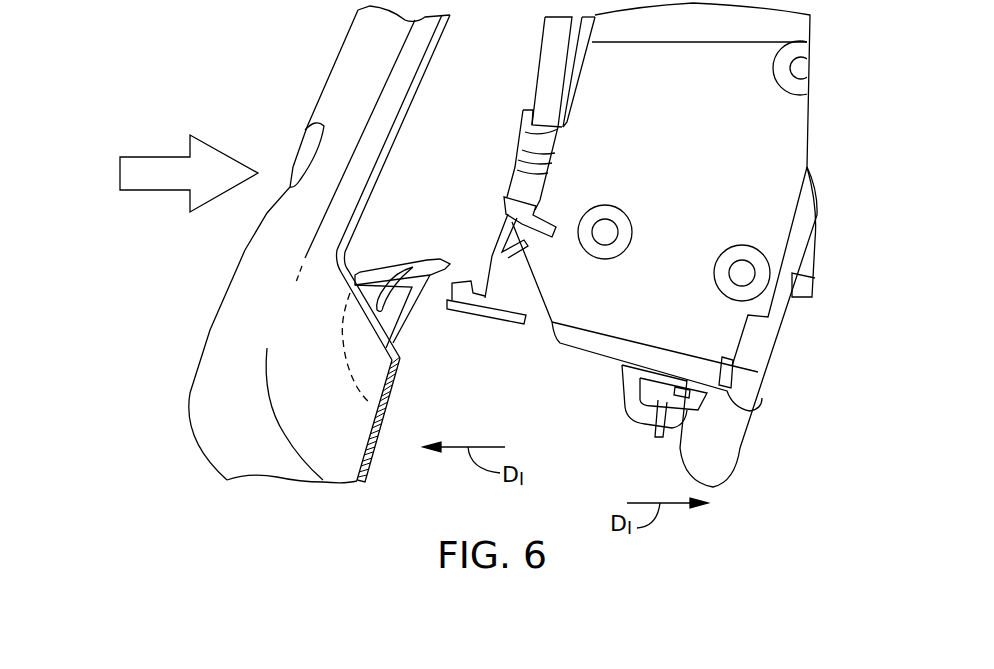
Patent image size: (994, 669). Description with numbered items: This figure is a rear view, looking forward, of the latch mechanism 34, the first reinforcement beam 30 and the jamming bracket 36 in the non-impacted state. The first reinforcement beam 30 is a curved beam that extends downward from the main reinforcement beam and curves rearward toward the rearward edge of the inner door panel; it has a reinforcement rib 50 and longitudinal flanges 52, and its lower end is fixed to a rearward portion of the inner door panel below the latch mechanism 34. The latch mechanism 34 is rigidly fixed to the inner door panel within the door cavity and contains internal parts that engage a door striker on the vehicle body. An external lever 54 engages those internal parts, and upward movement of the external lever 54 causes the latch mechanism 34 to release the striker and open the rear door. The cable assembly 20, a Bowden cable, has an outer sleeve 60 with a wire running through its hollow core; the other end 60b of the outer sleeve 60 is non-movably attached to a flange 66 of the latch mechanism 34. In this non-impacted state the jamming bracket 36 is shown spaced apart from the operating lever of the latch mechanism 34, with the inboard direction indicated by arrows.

The cable assembly 20 is at (552, 85).
The first reinforcement beam 30 is at (342, 55).
The latch mechanism 34 is at (763, 134).
The jamming bracket 36 is at (412, 253).
The reinforcement rib 50 is at (250, 311).
The longitudinal flanges 52 is at (397, 352).
The external lever 54 is at (497, 316).
The outer sleeve 60 is at (557, 33).
The other end of the outer sleeve 60b is at (527, 137).
The flange 66 is at (510, 203).